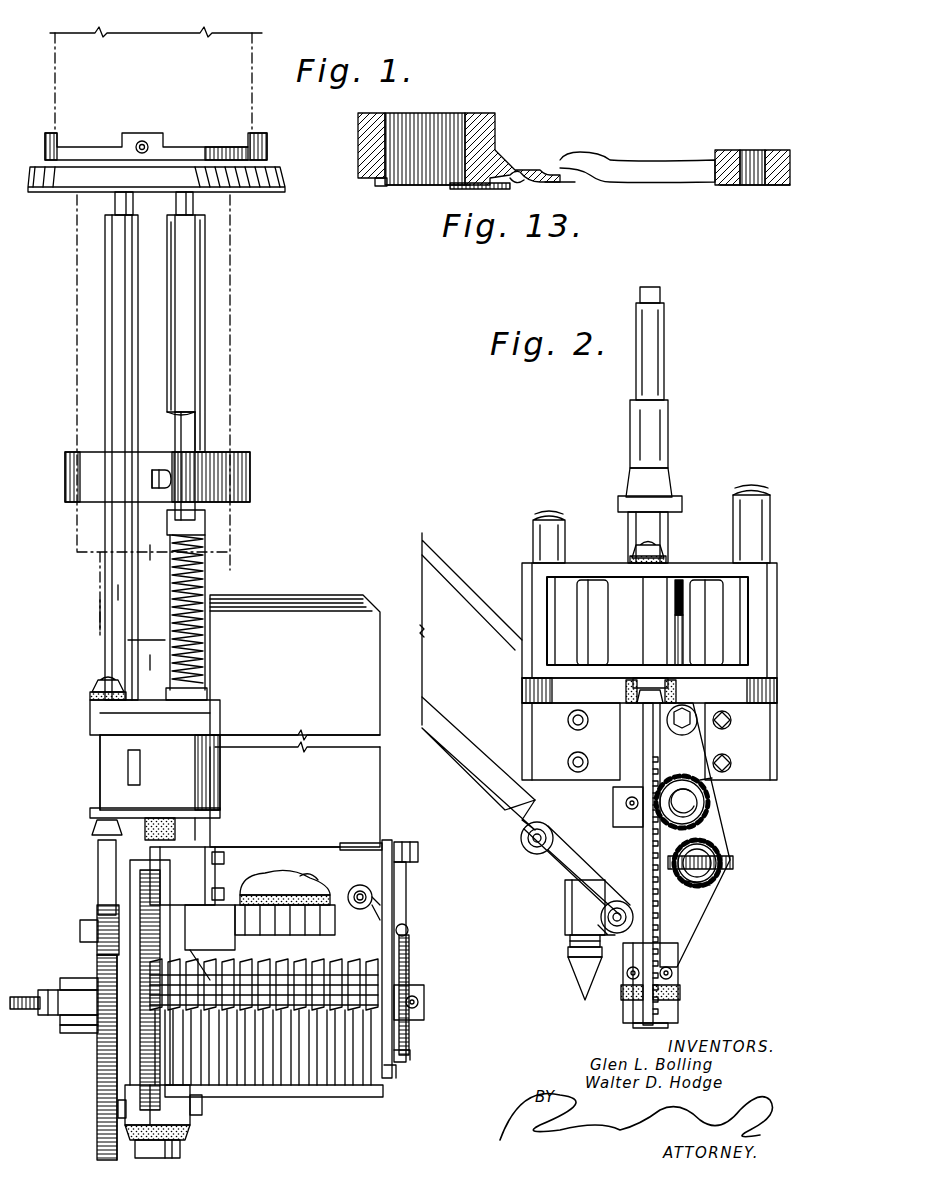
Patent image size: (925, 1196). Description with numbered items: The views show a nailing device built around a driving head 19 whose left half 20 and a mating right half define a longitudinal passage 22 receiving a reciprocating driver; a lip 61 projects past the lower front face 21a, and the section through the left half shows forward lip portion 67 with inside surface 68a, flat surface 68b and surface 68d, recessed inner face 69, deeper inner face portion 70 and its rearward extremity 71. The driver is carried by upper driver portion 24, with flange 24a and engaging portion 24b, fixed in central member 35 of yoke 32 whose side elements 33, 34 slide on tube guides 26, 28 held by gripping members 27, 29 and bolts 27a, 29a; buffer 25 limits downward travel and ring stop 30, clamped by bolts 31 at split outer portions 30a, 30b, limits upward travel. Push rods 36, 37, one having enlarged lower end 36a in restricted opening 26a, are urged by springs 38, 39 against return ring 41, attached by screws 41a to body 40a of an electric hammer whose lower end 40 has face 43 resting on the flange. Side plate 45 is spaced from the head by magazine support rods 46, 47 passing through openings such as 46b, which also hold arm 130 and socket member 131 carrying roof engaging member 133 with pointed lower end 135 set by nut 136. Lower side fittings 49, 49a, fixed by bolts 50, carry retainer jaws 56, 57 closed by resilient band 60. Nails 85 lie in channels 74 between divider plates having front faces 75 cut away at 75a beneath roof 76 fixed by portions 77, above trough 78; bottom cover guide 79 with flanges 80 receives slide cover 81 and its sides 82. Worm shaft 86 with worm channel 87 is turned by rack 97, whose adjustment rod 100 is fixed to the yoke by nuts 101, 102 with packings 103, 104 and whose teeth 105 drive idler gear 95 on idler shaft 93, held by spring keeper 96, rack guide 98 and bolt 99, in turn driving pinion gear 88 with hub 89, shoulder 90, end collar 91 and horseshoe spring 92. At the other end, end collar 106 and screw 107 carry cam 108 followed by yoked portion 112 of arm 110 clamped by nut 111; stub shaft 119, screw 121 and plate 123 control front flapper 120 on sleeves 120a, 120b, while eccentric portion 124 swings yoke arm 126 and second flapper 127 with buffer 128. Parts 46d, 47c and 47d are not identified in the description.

In FIG. 1, the driving head 19 is at (108, 1140).
In FIG. 1, the left half 20 is at (142, 1050).
In FIG. 2, the left half 20 is at (690, 925).
In FIG. 1, the lower front face 21a is at (175, 1152).
In FIG. 1, the passage 22 is at (160, 1052).
In FIG. 13, the passage 22 is at (518, 186).
In FIG. 1, the upper driver portion 24 is at (150, 660).
In FIG. 2, the upper driver portion 24 is at (668, 524).
In FIG. 1, the flange 24a is at (128, 645).
In FIG. 2, the flange 24a is at (680, 502).
In FIG. 1, the engaging portion 24b is at (150, 557).
In FIG. 2, the engaging portion 24b is at (660, 392).
In FIG. 1, the buffer 25 is at (140, 832).
In FIG. 2, the buffer 25 is at (676, 692).
In FIG. 1, the tube guide 26 is at (202, 832).
In FIG. 2, the tube guide 26 is at (770, 520).
In FIG. 1, the restricted opening 26a is at (207, 238).
In FIG. 1, the gripping member 27 is at (210, 875).
In FIG. 2, the gripping member 27 is at (780, 780).
In FIG. 1, the bolts 27a is at (225, 895).
In FIG. 2, the bolts 27a is at (728, 740).
In FIG. 1, the tube guide 28 is at (118, 588).
In FIG. 2, the tube guide 28 is at (540, 690).
In FIG. 2, the gripping member 29 is at (538, 736).
In FIG. 2, the bolts 29a is at (588, 745).
In FIG. 1, the ring stop 30 is at (65, 490).
In FIG. 1, the split outer portion 30a is at (207, 438).
In FIG. 1, the split outer portion 30b is at (215, 462).
In FIG. 1, the bolts 31 is at (152, 482).
In FIG. 1, the yoke 32 is at (120, 718).
In FIG. 2, the yoke 32 is at (665, 572).
In FIG. 1, the side element 33 is at (210, 785).
In FIG. 2, the side element 33 is at (738, 620).
In FIG. 2, the side element 34 is at (572, 625).
In FIG. 1, the central member 35 is at (150, 768).
In FIG. 2, the central member 35 is at (684, 640).
In FIG. 1, the push rod 36 is at (193, 205).
In FIG. 1, the enlarged lower end 36a is at (207, 530).
In FIG. 1, the push rod 37 is at (133, 204).
In FIG. 1, the spring 38 is at (207, 565).
In FIG. 2, the spring 38 is at (752, 480).
In FIG. 2, the spring 39 is at (558, 510).
In FIG. 1, the lower end of electric hammer 40 is at (82, 377).
In FIG. 1, the body of the hammer 40a is at (241, 108).
In FIG. 1, the return ring 41 is at (198, 150).
In FIG. 1, the screws 41a is at (145, 141).
In FIG. 1, the face 43 is at (100, 625).
In FIG. 1, the side plate 45 is at (394, 893).
In FIG. 2, the magazine support rod 46 is at (525, 848).
In FIG. 13, the opening 46b is at (755, 152).
In FIG. 2, the arm 46d is at (570, 876).
In FIG. 2, the magazine support rod 47 is at (606, 938).
In FIG. 1, the pin 47c is at (391, 1070).
In FIG. 2, the pivot 47d is at (616, 902).
In FIG. 1, the lower side fitting 49 is at (125, 1105).
In FIG. 2, the lower side fitting 49 is at (628, 1015).
In FIG. 1, the lower side fitting 49a is at (202, 1105).
In FIG. 1, the bolts 50 is at (202, 1112).
In FIG. 2, the bolts 50 is at (674, 977).
In FIG. 1, the retainer jaw 56 is at (140, 1152).
In FIG. 2, the retainer jaw 56 is at (652, 1028).
In FIG. 1, the retainer jaw 57 is at (184, 1148).
In FIG. 1, the band 60 is at (188, 1133).
In FIG. 2, the band 60 is at (683, 993).
In FIG. 1, the lip 61 is at (158, 1095).
In FIG. 13, the forward lip portion 67 is at (440, 186).
In FIG. 13, the inside surface 68a is at (470, 189).
In FIG. 13, the flat surface 68b is at (562, 186).
In FIG. 13, the surface 68d is at (728, 188).
In FIG. 13, the inner face 69 is at (400, 185).
In FIG. 13, the inner face portion 70 is at (368, 180).
In FIG. 13, the rearward extremity 71 is at (528, 156).
In FIG. 1, the nail receiving channels 74 is at (345, 1070).
In FIG. 1, the front faces 75 is at (290, 1065).
In FIG. 1, the cut away portion 75a is at (210, 950).
In FIG. 1, the roof or hood portion 76 is at (240, 905).
In FIG. 1, the downwardly extending portions 77 is at (300, 905).
In FIG. 1, the trough 78 is at (355, 1090).
In FIG. 2, the magazine bottom cover guide 79 is at (478, 748).
In FIG. 2, the side flange portions 80 is at (492, 775).
In FIG. 2, the slide cover 81 is at (470, 575).
In FIG. 2, the downwardly extending sides 82 is at (468, 602).
In FIG. 1, the nails 85 is at (282, 594).
In FIG. 1, the worm shaft 86 is at (245, 990).
In FIG. 2, the worm shaft 86 is at (712, 888).
In FIG. 1, the worm channel 87 is at (320, 990).
In FIG. 13, the worm channel 87 is at (448, 115).
In FIG. 1, the pinion gear 88 is at (100, 1035).
In FIG. 2, the pinion gear 88 is at (720, 858).
In FIG. 1, the hub 89 is at (85, 982).
In FIG. 1, the shoulder 90 is at (92, 1025).
In FIG. 1, the end collar 91 is at (50, 992).
In FIG. 2, the end collar 91 is at (688, 882).
In FIG. 1, the horseshoe spring 92 is at (45, 1008).
In FIG. 2, the horseshoe spring 92 is at (733, 864).
In FIG. 1, the idler shaft 93 is at (80, 928).
In FIG. 2, the idler shaft 93 is at (697, 806).
In FIG. 1, the idler gear 95 is at (98, 910).
In FIG. 2, the idler gear 95 is at (680, 775).
In FIG. 2, the spring keeper 96 is at (712, 790).
In FIG. 1, the rack 97 is at (100, 880).
In FIG. 2, the rack 97 is at (650, 747).
In FIG. 2, the rack guide 98 is at (613, 818).
In FIG. 2, the bolt 99 is at (633, 809).
In FIG. 1, the rack adjustment rod 100 is at (100, 770).
In FIG. 1, the nut 101 is at (92, 686).
In FIG. 2, the nut 101 is at (636, 542).
In FIG. 1, the nut 102 is at (92, 830).
In FIG. 2, the nut 102 is at (637, 695).
In FIG. 1, the shims and packings 103 is at (90, 700).
In FIG. 2, the shims and packings 103 is at (630, 560).
In FIG. 1, the shims and packings 104 is at (95, 812).
In FIG. 2, the shims and packings 104 is at (645, 678).
In FIG. 1, the teeth 105 is at (100, 1128).
In FIG. 1, the end collar 106 is at (424, 990).
In FIG. 1, the screw 107 is at (418, 1002).
In FIG. 1, the cam 108 is at (409, 955).
In FIG. 1, the arm 110 is at (406, 910).
In FIG. 1, the nut 111 is at (418, 852).
In FIG. 1, the yoked lower portion 112 is at (408, 930).
In FIG. 1, the stub shaft 119 is at (393, 884).
In FIG. 1, the front catch plate or flapper 120 is at (295, 797).
In FIG. 1, the sleeve 120a is at (355, 840).
In FIG. 1, the sleeve 120b is at (235, 857).
In FIG. 1, the screw 121 is at (359, 911).
In FIG. 1, the plate 123 is at (362, 885).
In FIG. 1, the eccentric portion 124 is at (404, 1052).
In FIG. 1, the yoke arm 126 is at (384, 909).
In FIG. 1, the second flapper 127 is at (275, 888).
In FIG. 1, the resilient buffer 128 is at (312, 880).
In FIG. 2, the arm 130 is at (565, 908).
In FIG. 2, the socket member 131 is at (570, 922).
In FIG. 2, the roof engaging member 133 is at (578, 955).
In FIG. 2, the pointed lower end 135 is at (578, 982).
In FIG. 2, the nut 136 is at (570, 941).